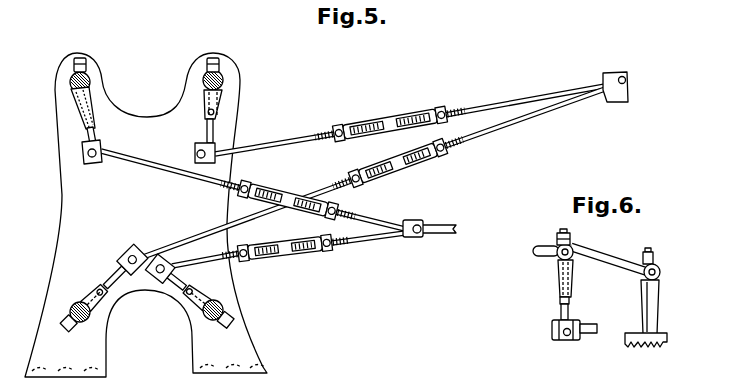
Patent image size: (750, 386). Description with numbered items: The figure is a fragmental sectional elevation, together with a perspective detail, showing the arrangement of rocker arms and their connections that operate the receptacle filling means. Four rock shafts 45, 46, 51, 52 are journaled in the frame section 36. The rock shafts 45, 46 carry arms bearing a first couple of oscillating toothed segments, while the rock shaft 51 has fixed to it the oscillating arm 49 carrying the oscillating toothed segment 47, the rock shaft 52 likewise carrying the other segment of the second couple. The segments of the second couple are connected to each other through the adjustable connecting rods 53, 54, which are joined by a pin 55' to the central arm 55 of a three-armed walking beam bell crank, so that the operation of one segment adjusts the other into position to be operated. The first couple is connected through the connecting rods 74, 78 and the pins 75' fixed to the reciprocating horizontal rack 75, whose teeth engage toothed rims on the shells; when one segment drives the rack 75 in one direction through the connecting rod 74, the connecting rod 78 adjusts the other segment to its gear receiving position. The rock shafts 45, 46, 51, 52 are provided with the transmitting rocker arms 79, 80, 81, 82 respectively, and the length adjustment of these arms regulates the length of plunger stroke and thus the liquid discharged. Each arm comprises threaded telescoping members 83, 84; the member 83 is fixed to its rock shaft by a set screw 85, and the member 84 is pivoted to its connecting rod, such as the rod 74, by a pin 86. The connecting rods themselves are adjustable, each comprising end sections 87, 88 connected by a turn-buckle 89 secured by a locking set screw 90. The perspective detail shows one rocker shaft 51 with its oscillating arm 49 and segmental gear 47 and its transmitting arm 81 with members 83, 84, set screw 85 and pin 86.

In FIG. 5, the section 36 is at (61, 222).
In FIG. 5, the rock shaft 45 is at (92, 82).
In FIG. 5, the rock shaft 46 is at (223, 309).
In FIG. 6, the oscillating toothed segment 47 is at (668, 335).
In FIG. 6, the oscillating arm 49 is at (658, 305).
In FIG. 5, the rock shaft 51 is at (226, 80).
In FIG. 6, the rock shaft 51 is at (616, 272).
In FIG. 5, the rock shaft 52 is at (70, 312).
In FIG. 5, the adjustable connecting rod 53 is at (513, 97).
In FIG. 5, the adjustable connecting rod 54 is at (520, 121).
In FIG. 5, the central arm 55 is at (637, 88).
In FIG. 5, the pin 55' is at (646, 75).
In FIG. 5, the connecting rod 74 is at (392, 222).
In FIG. 5, the horizontal rack 75 is at (449, 217).
In FIG. 5, the pin 75' is at (422, 244).
In FIG. 5, the connecting rod 78 is at (380, 241).
In FIG. 5, the transmitting arm 79 is at (100, 125).
In FIG. 5, the transmitting arm 80 is at (185, 306).
In FIG. 5, the transmitting arm 81 is at (223, 107).
In FIG. 6, the transmitting arm 81 is at (548, 278).
In FIG. 5, the transmitting arm 82 is at (92, 286).
In FIG. 5, the threaded telescoping member 83 is at (72, 105).
In FIG. 6, the threaded telescoping member 83 is at (556, 268).
In FIG. 5, the threaded telescoping member 84 is at (85, 137).
In FIG. 6, the threaded telescoping member 84 is at (561, 306).
In FIG. 5, the set screw 85 is at (80, 58).
In FIG. 6, the set screw 85 is at (558, 232).
In FIG. 5, the pin 86 is at (91, 160).
In FIG. 6, the pin 86 is at (566, 341).
In FIG. 5, the end section 87 is at (161, 170).
In FIG. 6, the end section 87 is at (588, 334).
In FIG. 5, the end section 88 is at (465, 108).
In FIG. 5, the turn-buckle 89 is at (372, 115).
In FIG. 5, the locking set screw 90 is at (341, 127).